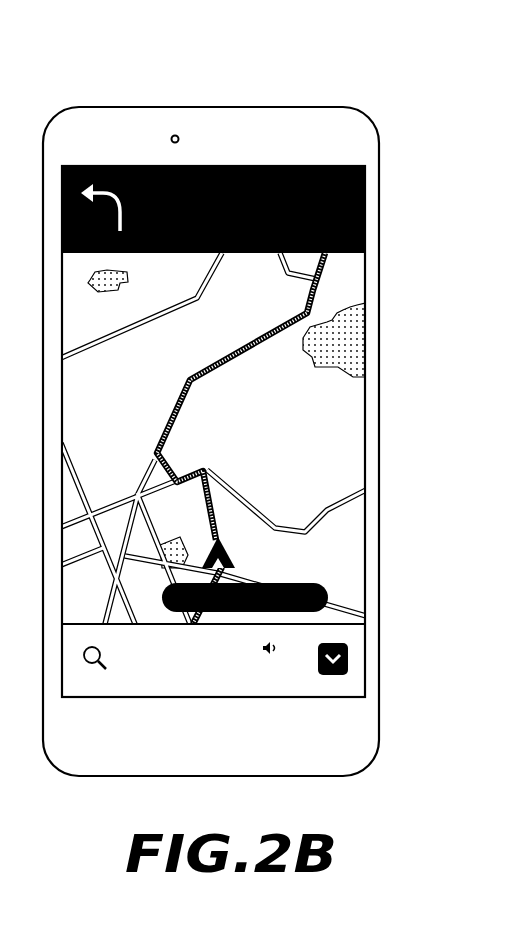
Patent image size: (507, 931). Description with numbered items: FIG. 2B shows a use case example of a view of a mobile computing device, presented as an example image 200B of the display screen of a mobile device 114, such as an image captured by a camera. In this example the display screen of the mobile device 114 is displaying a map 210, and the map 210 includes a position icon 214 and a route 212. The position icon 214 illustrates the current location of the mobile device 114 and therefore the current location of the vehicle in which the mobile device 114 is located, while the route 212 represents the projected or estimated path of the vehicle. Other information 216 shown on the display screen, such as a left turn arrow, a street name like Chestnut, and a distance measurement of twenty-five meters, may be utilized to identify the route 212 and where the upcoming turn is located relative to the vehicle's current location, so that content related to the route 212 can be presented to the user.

The image 200B is at (385, 60).
The mobile device 114 is at (365, 127).
The other information 216 is at (395, 165).
The route 212 is at (307, 438).
The map 210 is at (322, 432).
The position icon 214 is at (222, 555).